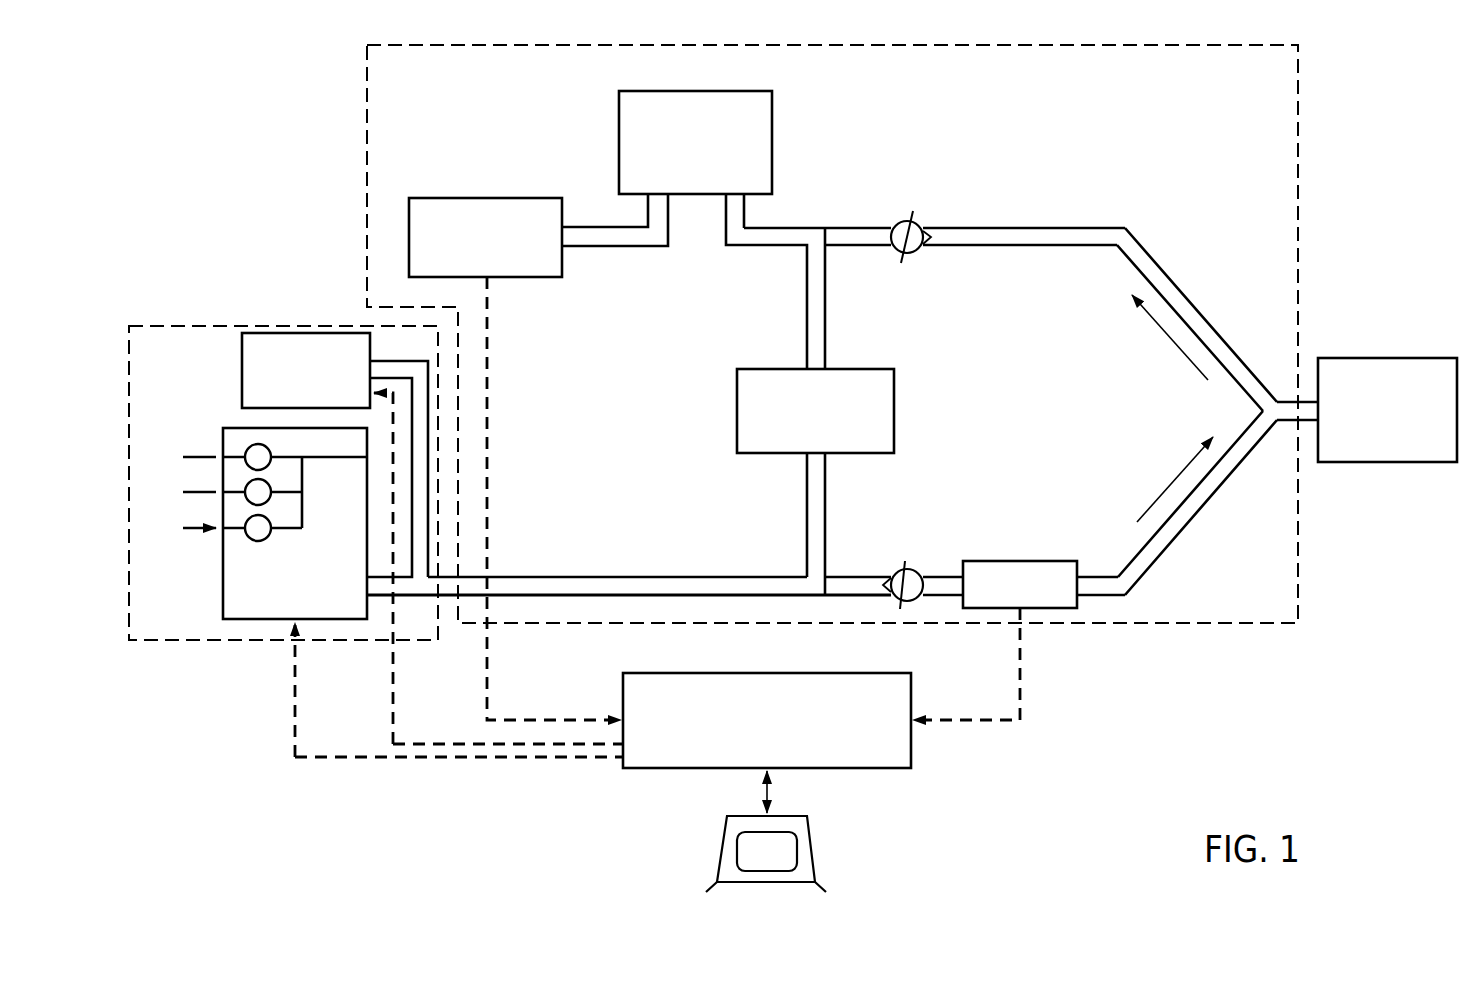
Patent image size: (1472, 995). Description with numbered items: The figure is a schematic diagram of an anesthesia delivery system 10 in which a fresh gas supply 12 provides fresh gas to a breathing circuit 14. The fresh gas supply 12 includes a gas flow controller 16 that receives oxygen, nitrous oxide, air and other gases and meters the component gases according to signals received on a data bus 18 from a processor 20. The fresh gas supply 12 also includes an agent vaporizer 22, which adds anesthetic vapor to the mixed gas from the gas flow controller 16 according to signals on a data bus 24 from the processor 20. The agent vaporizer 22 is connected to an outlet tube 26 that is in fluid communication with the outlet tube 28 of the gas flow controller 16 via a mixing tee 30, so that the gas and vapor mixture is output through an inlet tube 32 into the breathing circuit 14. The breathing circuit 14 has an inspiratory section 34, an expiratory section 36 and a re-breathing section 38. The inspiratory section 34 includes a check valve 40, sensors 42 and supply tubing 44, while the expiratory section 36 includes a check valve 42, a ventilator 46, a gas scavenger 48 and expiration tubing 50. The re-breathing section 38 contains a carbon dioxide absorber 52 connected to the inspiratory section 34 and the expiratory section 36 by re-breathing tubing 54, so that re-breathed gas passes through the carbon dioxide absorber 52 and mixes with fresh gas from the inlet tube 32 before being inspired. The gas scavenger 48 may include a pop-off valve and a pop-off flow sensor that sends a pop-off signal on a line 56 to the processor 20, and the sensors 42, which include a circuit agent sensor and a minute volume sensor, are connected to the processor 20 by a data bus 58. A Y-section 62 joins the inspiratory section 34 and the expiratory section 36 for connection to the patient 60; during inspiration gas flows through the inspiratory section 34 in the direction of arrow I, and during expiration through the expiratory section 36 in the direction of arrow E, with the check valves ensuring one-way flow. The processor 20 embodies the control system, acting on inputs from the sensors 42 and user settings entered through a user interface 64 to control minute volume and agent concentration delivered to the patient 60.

The anesthesia delivery system 10 is at (286, 238).
The fresh gas supply 12 is at (168, 326).
The breathing circuit 14 is at (367, 83).
The gas flow controller 16 is at (223, 590).
The data bus 18 is at (294, 678).
The processor 20 is at (664, 769).
The agent vaporizer 22 is at (242, 372).
The data bus 24 is at (393, 694).
The outlet tube 26 is at (428, 368).
The outlet tube 28 is at (388, 598).
The mixing tee 30 is at (422, 604).
The inlet tube 32 is at (538, 577).
The inspiratory section 34 is at (1108, 511).
The expiratory section 36 is at (1111, 298).
The re-breathing section 38 is at (768, 338).
The inspiratory check valve 40 is at (906, 568).
The sensors / expiratory check valve 42 is at (921, 222).
The supply tubing 44 is at (1163, 547).
The ventilator 46 is at (772, 140).
The gas scavenger 48 is at (530, 277).
The expiration tubing 50 is at (1010, 226).
The carbon dioxide absorber 52 is at (894, 410).
The re-breathing tubing 54 is at (808, 512).
The line 56 is at (487, 435).
The data bus 58 is at (970, 720).
The patient 60 is at (1390, 463).
The Y-section 62 is at (1233, 408).
The user interface 64 is at (813, 845).